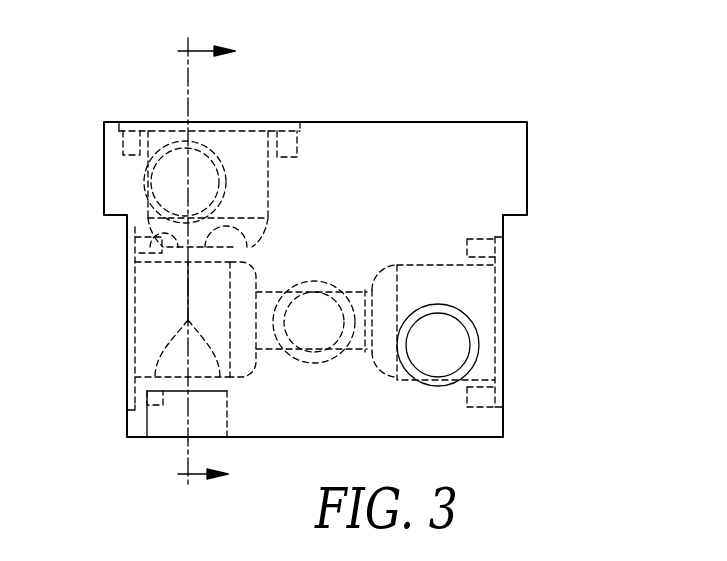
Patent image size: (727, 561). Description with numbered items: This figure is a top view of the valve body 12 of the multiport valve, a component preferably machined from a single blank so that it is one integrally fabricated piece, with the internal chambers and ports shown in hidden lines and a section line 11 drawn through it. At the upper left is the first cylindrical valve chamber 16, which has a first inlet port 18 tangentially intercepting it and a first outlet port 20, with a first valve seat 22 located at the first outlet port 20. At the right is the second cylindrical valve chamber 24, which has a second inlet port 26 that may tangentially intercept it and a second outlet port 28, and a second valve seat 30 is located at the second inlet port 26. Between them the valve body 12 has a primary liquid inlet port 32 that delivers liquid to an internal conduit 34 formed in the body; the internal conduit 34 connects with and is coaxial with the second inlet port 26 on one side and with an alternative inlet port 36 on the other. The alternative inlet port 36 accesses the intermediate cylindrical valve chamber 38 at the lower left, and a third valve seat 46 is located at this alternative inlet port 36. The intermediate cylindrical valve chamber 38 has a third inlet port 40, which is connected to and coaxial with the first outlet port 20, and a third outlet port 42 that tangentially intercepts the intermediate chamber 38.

The section line 11- 11 is at (210, 260).
The valve body 12 is at (366, 114).
The first cylindrical valve chamber 16 is at (268, 172).
The first inlet port 18 is at (163, 150).
The first outlet port 20 is at (252, 242).
The first valve seat 22 is at (135, 237).
The second cylindrical valve chamber 24 is at (485, 282).
The second inlet port 26 is at (376, 354).
The second outlet port 28 is at (462, 348).
The second valve seat 30 is at (372, 290).
The primary liquid inlet port 32 is at (314, 322).
The internal conduit 34 is at (356, 292).
The alternative inlet port 36 is at (244, 320).
The intermediate cylindrical valve chamber 38 is at (145, 313).
The third inlet port 40 is at (172, 262).
The third outlet port 42 is at (158, 427).
The third valve seat 46 is at (265, 357).